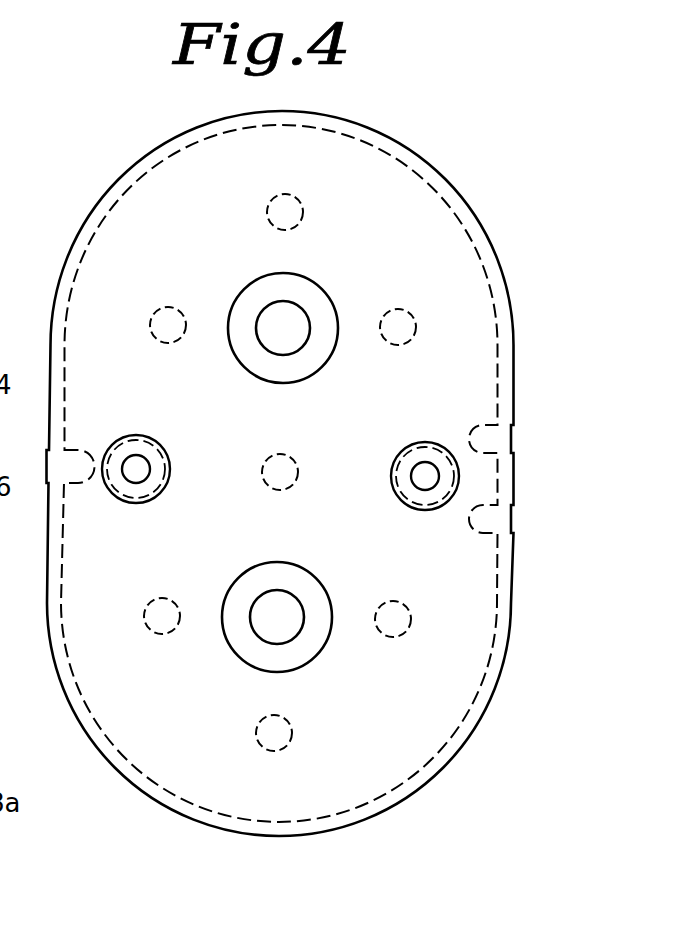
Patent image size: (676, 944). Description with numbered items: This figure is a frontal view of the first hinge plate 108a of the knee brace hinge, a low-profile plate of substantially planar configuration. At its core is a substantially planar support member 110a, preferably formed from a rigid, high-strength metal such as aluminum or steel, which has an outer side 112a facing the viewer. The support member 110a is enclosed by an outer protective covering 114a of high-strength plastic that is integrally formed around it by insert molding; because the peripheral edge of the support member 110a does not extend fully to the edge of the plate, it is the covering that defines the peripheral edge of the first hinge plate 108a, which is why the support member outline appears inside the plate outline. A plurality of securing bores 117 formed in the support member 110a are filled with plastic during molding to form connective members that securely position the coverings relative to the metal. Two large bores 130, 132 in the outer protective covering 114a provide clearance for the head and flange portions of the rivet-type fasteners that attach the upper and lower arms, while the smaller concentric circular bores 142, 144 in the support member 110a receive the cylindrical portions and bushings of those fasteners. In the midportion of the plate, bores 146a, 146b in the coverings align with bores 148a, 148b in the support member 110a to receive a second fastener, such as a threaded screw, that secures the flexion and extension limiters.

The first hinge plate 108a is at (338, 473).
The support member 110a is at (422, 176).
The outer protective covering 114a is at (165, 199).
The outer side 112a is at (277, 316).
The securing bores 117 is at (298, 224).
The bore 130 is at (260, 278).
The circular bore 142 is at (303, 308).
The bore 132 is at (316, 579).
The circular bore 144 is at (296, 637).
The bore 148b is at (160, 448).
The bore 146b is at (146, 480).
The bore 148a is at (410, 504).
The bore 146a is at (417, 465).